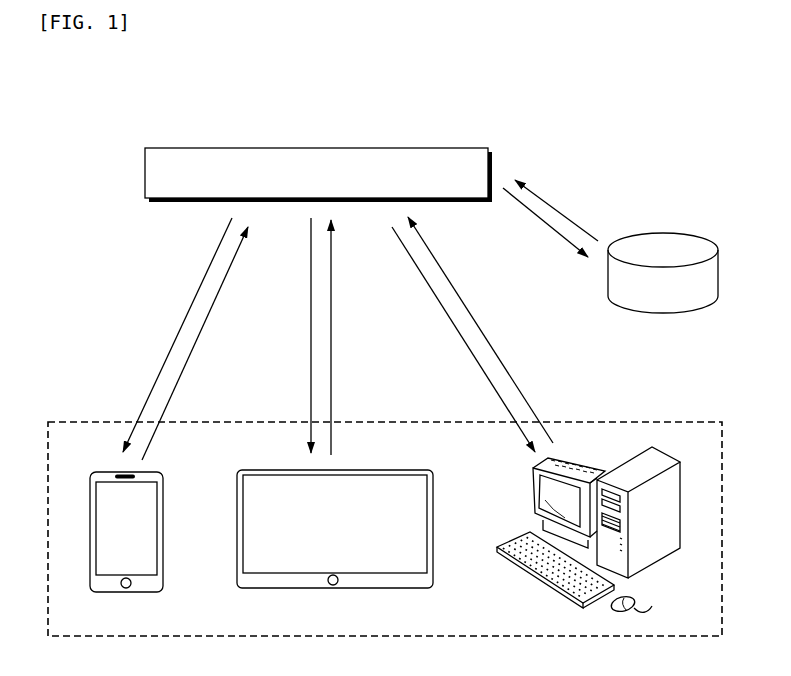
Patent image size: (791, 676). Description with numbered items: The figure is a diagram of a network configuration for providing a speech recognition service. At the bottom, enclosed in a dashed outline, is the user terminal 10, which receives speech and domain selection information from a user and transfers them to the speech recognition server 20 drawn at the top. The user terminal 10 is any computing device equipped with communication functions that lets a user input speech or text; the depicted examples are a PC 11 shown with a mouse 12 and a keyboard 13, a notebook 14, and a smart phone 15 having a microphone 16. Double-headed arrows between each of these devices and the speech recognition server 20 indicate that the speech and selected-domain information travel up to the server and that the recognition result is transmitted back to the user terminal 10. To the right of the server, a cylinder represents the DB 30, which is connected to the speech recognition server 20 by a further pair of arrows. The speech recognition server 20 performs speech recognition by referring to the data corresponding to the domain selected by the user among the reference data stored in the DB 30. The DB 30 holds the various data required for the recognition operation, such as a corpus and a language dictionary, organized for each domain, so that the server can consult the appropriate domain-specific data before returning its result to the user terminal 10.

The user terminal 10 is at (650, 421).
The PC 11 is at (668, 517).
The mouse 12 is at (646, 602).
The keyboard 13 is at (538, 578).
The notebook 14 is at (373, 584).
The smart phone 15 is at (146, 584).
The microphone 16 is at (124, 475).
The speech recognition server 20 is at (462, 148).
The DB 30 is at (690, 233).